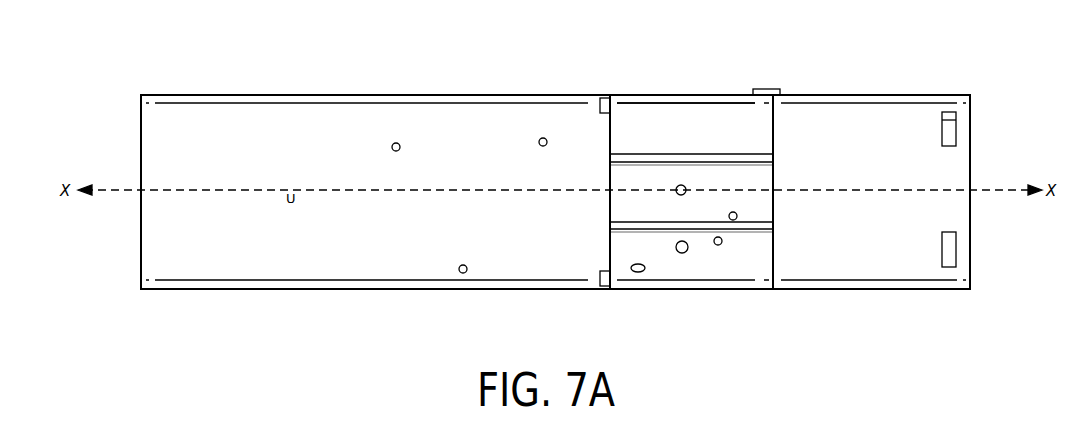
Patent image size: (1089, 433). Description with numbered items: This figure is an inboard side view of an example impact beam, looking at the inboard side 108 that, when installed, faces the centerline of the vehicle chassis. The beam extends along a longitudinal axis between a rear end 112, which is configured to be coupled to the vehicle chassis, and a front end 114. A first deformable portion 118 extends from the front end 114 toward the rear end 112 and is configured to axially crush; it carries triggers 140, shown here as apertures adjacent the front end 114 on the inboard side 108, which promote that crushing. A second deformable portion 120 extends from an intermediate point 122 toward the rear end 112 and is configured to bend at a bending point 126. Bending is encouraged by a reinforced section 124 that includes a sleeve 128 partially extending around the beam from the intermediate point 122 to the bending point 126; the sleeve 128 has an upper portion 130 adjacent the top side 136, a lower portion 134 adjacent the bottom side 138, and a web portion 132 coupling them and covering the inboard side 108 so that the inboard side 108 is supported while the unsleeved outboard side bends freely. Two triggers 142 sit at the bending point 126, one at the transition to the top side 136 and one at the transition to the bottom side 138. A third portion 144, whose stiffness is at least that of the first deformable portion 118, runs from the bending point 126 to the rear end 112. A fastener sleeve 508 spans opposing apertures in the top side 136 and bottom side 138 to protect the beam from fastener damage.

The inboard side 108 is at (402, 116).
The rear end 112 is at (140, 128).
The front end 114 is at (970, 100).
The first deformable portion 118 is at (887, 110).
The second deformable portion 120 is at (676, 95).
The intermediate point 122 is at (776, 290).
The reinforced section 124 is at (708, 110).
The bending point 126 is at (605, 95).
The sleeve 128 is at (762, 127).
The upper portion 130 is at (637, 95).
The web portion 132 is at (757, 203).
The lower portion 134 is at (705, 290).
The top side 136 is at (295, 95).
The bottom side 138 is at (298, 290).
The triggers 140 is at (956, 130).
The triggers 142 is at (600, 107).
The third portion 144 is at (215, 249).
The fastener sleeve 508 is at (773, 90).